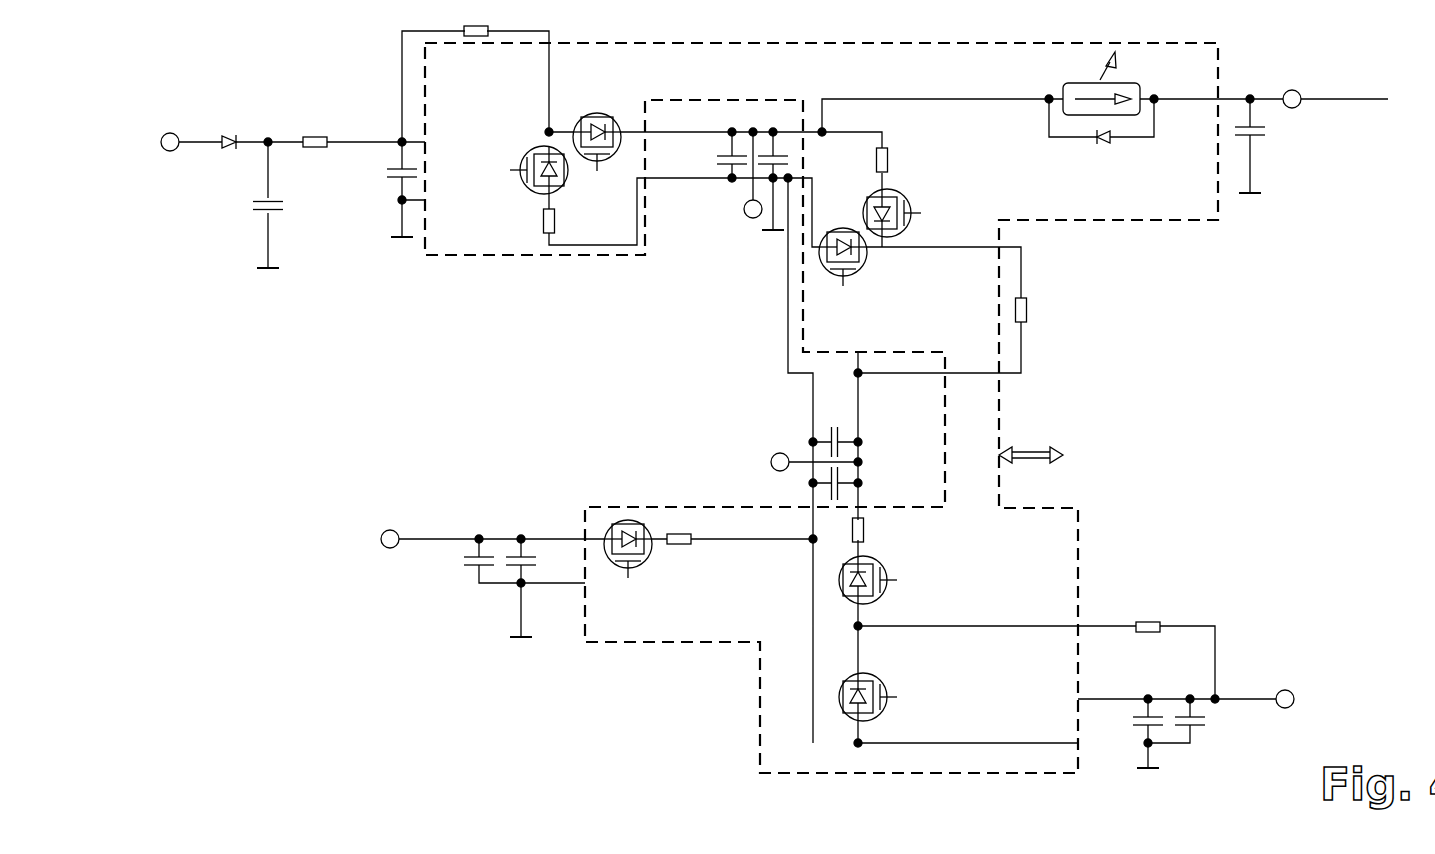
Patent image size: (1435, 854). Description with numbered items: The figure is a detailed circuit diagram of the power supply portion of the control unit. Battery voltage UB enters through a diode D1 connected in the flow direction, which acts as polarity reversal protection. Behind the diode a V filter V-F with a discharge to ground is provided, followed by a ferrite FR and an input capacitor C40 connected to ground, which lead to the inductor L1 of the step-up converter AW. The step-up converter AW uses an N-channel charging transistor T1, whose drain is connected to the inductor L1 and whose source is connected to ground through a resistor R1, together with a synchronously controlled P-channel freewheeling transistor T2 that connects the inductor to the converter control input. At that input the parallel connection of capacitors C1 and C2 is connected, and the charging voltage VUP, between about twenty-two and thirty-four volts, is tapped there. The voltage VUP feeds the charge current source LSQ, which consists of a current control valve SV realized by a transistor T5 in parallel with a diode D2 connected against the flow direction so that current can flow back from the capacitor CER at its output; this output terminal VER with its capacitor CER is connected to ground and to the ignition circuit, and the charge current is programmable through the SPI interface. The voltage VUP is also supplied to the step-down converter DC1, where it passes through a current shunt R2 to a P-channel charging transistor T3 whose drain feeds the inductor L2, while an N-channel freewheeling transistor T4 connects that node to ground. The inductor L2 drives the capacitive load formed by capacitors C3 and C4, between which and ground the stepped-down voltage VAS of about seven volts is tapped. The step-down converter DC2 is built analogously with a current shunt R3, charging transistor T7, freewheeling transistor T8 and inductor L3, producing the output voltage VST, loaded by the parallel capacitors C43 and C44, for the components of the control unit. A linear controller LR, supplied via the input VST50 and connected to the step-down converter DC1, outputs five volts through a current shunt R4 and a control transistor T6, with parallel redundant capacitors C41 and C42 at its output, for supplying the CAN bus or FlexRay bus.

The battery voltage UB is at (147, 121).
The diode D1 is at (231, 130).
The filter resistor FR is at (316, 129).
The V filter V-F is at (302, 231).
The input capacitor C40 is at (382, 200).
The inductor L1 is at (477, 20).
The charging transistor T1 is at (525, 170).
The freewheeling transistor T2 is at (597, 156).
The resistor R1 is at (535, 221).
The step-up converter AW is at (489, 238).
The capacitor C1 is at (717, 160).
The capacitor C2 is at (777, 150).
The charging voltage VUP is at (709, 225).
The current shunt R2 is at (868, 160).
The charging transistor T3 is at (908, 213).
The freewheeling transistor T4 is at (843, 269).
The step-down converter DC1 is at (818, 325).
The inductor L2 is at (1036, 312).
The transistor T5 is at (1100, 83).
The current control valve SV is at (1086, 127).
The diode D2 is at (1104, 153).
The charge current source LSQ is at (1160, 200).
The supply output VER is at (1289, 77).
The capacitor CER is at (1274, 157).
The capacitor C3 is at (835, 431).
The capacitor C4 is at (838, 473).
The stepped-down voltage VAS is at (755, 452).
The SPI interface SPI is at (1053, 459).
The 5V control supply input VST50 is at (389, 516).
The capacitor C41 is at (458, 565).
The capacitor C42 is at (544, 595).
The control transistor T6 is at (628, 563).
The current shunt R4 is at (679, 555).
The linear controller LR is at (633, 623).
The step-down converter DC2 is at (772, 710).
The current shunt R3 is at (874, 531).
The charging transistor T7 is at (882, 580).
The freewheeling transistor T8 is at (882, 697).
The inductor L3 is at (1149, 615).
The capacitor C43 is at (1126, 741).
The capacitor C44 is at (1212, 725).
The output voltage VST is at (1284, 677).